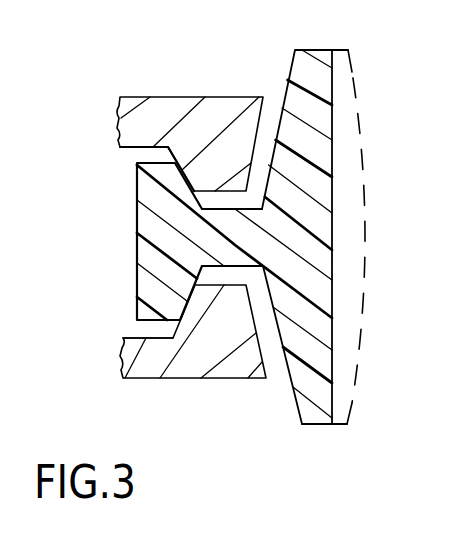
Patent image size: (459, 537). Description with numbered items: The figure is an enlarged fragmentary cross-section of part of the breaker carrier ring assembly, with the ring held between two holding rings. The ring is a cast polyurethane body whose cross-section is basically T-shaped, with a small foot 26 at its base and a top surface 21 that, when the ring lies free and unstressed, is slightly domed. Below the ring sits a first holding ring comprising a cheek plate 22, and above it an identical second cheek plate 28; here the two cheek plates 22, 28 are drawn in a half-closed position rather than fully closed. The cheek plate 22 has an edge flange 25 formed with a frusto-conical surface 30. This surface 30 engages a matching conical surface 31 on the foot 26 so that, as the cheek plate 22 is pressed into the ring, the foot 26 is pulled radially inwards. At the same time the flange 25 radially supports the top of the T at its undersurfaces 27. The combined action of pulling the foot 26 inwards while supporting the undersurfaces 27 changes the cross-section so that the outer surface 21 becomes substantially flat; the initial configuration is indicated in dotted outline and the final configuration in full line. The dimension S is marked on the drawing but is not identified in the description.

The top surface 21 is at (318, 157).
The cheek plate 22 is at (267, 357).
The edge flange 25 is at (226, 341).
The foot 26 is at (155, 217).
The undersurfaces 27 is at (290, 405).
The cheek plate 28 is at (126, 118).
The frusto-conical surface 30 is at (166, 333).
The conical surface 31 is at (208, 271).
The sheet thickness S is at (356, 90).